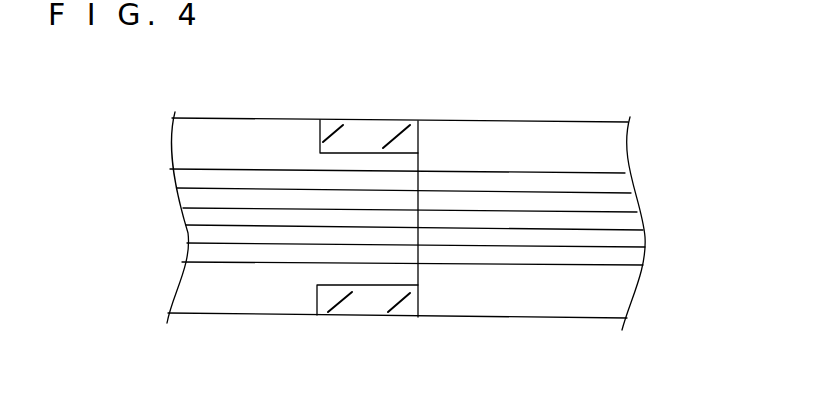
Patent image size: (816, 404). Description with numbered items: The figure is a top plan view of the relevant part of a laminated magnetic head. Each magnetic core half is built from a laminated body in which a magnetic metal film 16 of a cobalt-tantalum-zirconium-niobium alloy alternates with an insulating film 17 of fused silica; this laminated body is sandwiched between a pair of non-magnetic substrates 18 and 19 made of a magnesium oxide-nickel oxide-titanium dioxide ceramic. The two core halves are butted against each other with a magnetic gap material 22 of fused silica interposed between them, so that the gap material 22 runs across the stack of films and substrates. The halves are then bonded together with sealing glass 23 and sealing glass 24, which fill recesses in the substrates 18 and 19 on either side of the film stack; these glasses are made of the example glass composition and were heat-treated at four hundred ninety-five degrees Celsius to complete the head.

The magnetic metal film 16 is at (612, 202).
The insulating film 17 is at (645, 250).
The non-magnetic substrate 18 is at (587, 290).
The non-magnetic substrate 19 is at (592, 155).
The magnetic gap material 22 is at (420, 203).
The sealing glass 23 is at (368, 302).
The sealing glass 24 is at (368, 133).